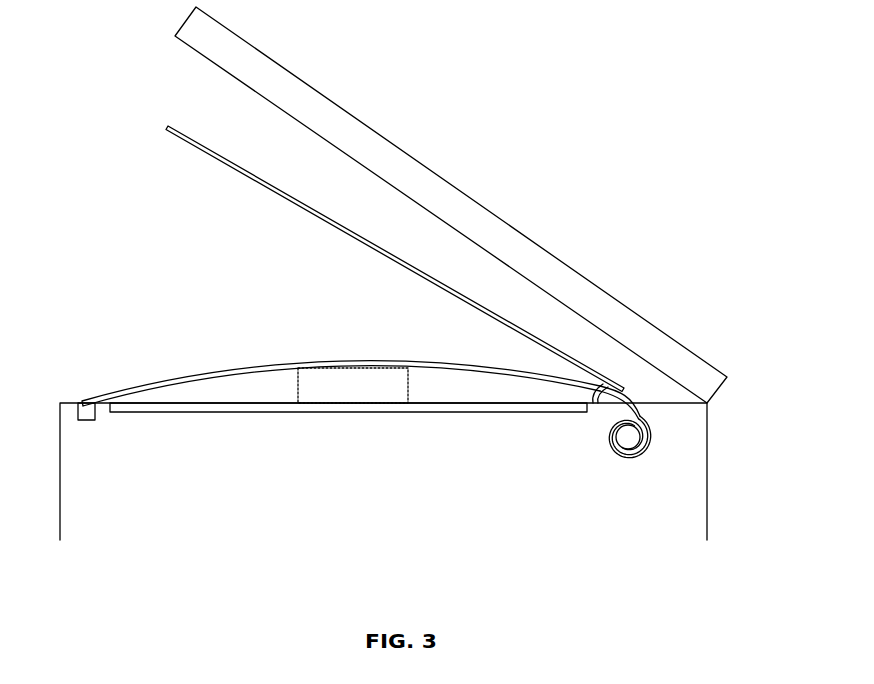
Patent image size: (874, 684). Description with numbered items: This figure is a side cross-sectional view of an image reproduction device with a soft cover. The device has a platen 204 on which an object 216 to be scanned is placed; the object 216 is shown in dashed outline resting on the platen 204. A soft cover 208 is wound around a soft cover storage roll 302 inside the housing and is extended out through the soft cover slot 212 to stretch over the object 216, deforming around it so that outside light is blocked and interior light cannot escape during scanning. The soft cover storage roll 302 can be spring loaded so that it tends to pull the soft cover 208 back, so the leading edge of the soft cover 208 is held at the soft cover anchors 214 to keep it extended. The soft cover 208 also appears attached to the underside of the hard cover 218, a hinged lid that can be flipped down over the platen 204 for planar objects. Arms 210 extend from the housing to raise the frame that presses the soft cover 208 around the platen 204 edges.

The platen 204 is at (210, 408).
The soft cover 208 is at (262, 185).
The arms 210 is at (597, 384).
The soft cover slot 212 is at (643, 398).
The soft cover anchors 214 is at (88, 408).
The object 216 is at (365, 387).
The hard cover 218 is at (370, 153).
The soft cover storage roll 302 is at (630, 437).